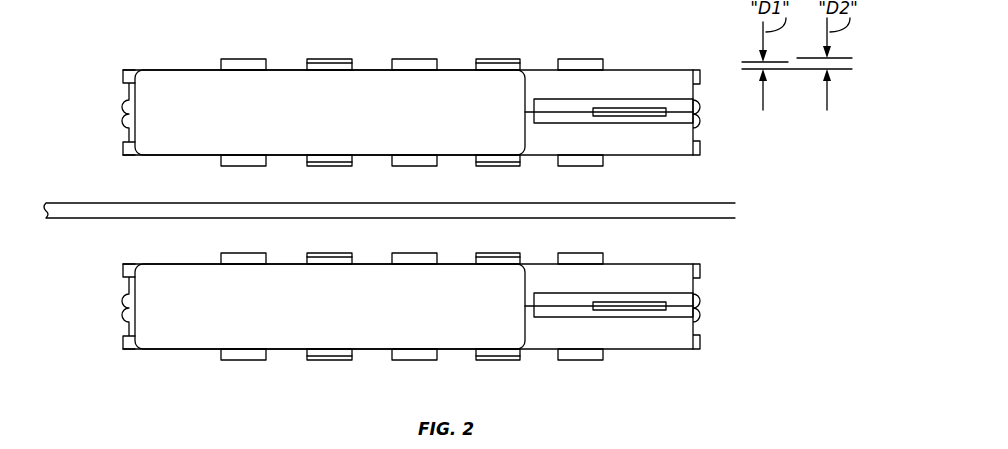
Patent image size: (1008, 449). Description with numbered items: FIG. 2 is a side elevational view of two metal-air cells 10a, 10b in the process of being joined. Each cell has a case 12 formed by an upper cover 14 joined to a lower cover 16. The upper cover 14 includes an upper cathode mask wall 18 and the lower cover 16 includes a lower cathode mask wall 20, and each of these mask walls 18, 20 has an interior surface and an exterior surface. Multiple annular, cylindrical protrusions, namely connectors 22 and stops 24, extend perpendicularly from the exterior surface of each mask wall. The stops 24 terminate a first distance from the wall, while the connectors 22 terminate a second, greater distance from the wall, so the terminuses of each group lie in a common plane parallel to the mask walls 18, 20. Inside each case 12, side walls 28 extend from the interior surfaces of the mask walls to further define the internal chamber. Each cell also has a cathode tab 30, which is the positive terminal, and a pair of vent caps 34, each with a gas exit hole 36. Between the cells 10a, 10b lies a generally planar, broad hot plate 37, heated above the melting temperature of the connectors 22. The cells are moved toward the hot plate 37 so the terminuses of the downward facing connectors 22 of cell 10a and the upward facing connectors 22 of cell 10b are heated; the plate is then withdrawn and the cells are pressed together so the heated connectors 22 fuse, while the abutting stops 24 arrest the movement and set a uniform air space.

The metal-air cell 10a is at (110, 99).
The metal-air cell 10b is at (110, 321).
The case 12 is at (691, 60).
The upper cover 14 is at (637, 70).
The lower cover 16 is at (655, 157).
The upper cathode mask wall 18 is at (134, 70).
The lower cathode mask wall 20 is at (134, 157).
The connectors 22 is at (243, 59).
The stops 24 is at (350, 59).
The side walls 28 is at (548, 80).
The cathode tab 30 is at (657, 116).
The vent caps 34 is at (195, 124).
The gas exit hole 36 is at (330, 115).
The hot plate 37 is at (88, 203).